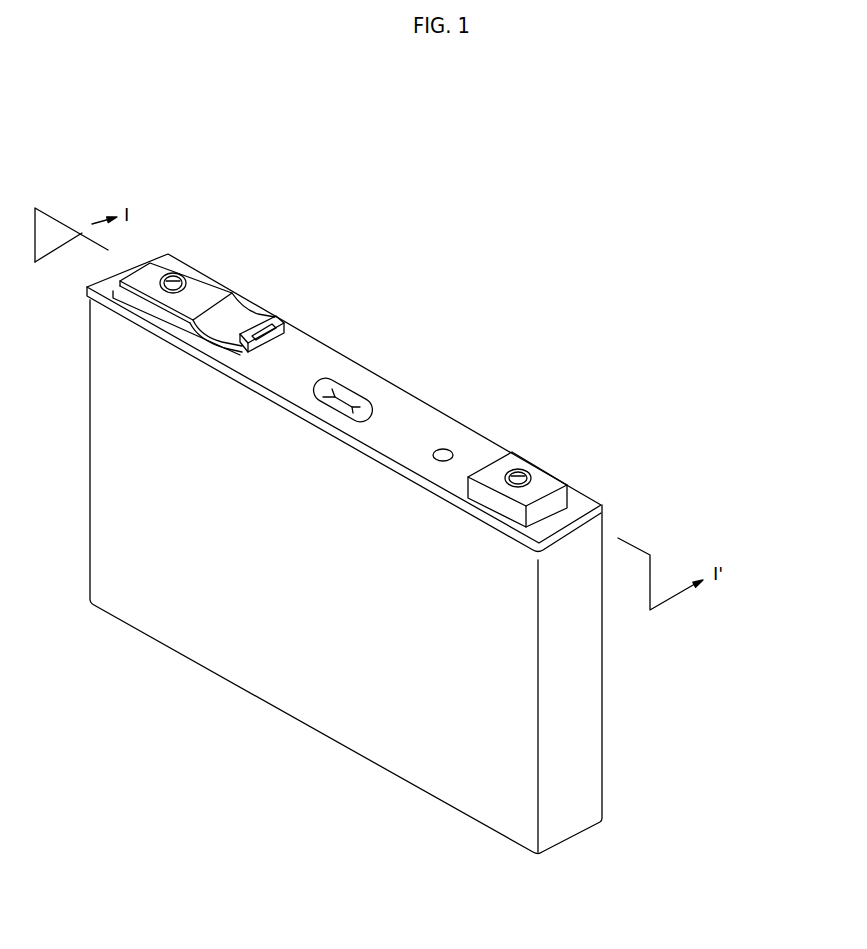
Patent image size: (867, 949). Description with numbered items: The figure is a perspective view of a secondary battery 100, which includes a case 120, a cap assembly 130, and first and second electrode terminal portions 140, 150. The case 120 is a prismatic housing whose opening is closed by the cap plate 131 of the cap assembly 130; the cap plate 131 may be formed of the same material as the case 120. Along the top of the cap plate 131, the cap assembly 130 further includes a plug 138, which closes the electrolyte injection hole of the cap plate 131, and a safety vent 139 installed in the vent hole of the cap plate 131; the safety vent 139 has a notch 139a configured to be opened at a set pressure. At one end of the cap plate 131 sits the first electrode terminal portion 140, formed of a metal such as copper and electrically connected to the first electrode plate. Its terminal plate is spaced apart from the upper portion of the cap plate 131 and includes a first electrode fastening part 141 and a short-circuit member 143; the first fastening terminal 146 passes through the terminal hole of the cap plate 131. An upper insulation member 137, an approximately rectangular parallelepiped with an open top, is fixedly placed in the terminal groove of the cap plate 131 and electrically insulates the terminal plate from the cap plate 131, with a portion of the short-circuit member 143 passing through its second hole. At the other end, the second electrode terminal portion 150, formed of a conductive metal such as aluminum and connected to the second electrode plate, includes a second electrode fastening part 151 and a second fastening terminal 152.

The secondary battery 100 is at (88, 117).
The case 120 is at (293, 702).
The cap assembly 130 is at (344, 403).
The cap plate 131 is at (297, 352).
The upper insulation member 137 is at (283, 322).
The plug 138 is at (443, 446).
The safety vent 139 is at (367, 363).
The notch 139a is at (352, 403).
The first electrode terminal portion 140 is at (226, 265).
The first electrode fastening part 141 is at (181, 262).
The short-circuit member 143 is at (248, 310).
The first fastening terminal 146 is at (195, 280).
The second electrode terminal portion 150 is at (553, 453).
The second electrode fastening part 151 is at (537, 475).
The second fastening terminal 152 is at (517, 470).